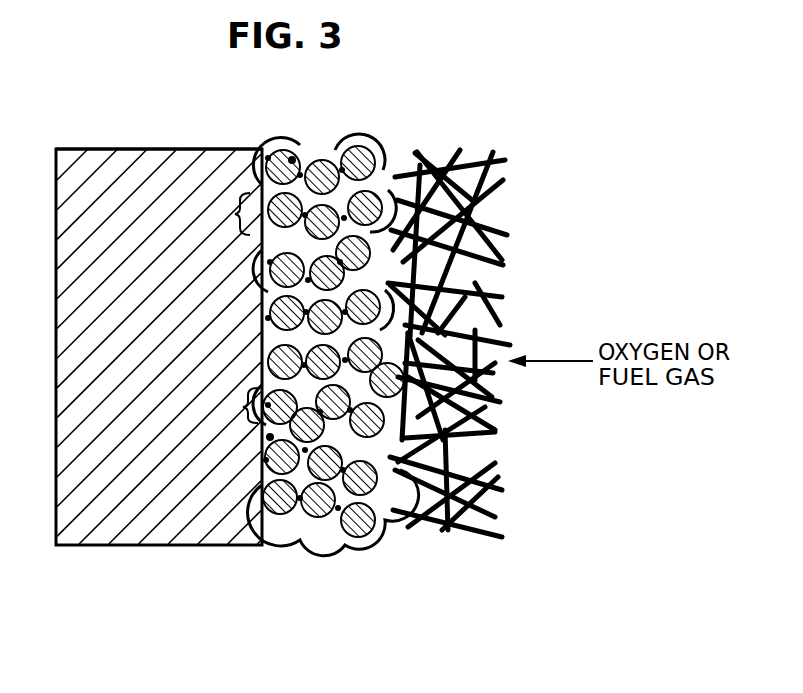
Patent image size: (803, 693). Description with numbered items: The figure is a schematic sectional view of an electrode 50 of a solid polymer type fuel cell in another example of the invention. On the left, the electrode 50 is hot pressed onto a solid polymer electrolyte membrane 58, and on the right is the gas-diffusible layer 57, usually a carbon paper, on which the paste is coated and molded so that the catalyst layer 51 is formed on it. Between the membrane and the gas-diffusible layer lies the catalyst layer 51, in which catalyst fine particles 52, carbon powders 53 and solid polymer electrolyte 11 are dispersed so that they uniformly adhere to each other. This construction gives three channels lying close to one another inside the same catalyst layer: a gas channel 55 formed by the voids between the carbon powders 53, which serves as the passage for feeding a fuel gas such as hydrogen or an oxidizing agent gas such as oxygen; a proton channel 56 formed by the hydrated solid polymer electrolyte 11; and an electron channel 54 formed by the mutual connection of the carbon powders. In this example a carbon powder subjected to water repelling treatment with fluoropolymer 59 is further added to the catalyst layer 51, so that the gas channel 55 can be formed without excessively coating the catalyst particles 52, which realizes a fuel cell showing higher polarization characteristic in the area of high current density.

The solid polymer electrolyte 11 is at (262, 148).
The electrode 50 is at (505, 614).
The catalyst layer 51 is at (345, 349).
The catalyst fine particles 52 is at (315, 150).
The carbon powders 53 is at (395, 150).
The electron channel 54 is at (242, 406).
The gas channel 55 is at (226, 215).
The proton channel 56 is at (280, 437).
The gas-diffusible layer 57 is at (505, 573).
The solid polymer electrolyte membrane 58 is at (262, 573).
The carbon powder subjected to water repelling treatment with fluoropolymer 59 is at (288, 152).